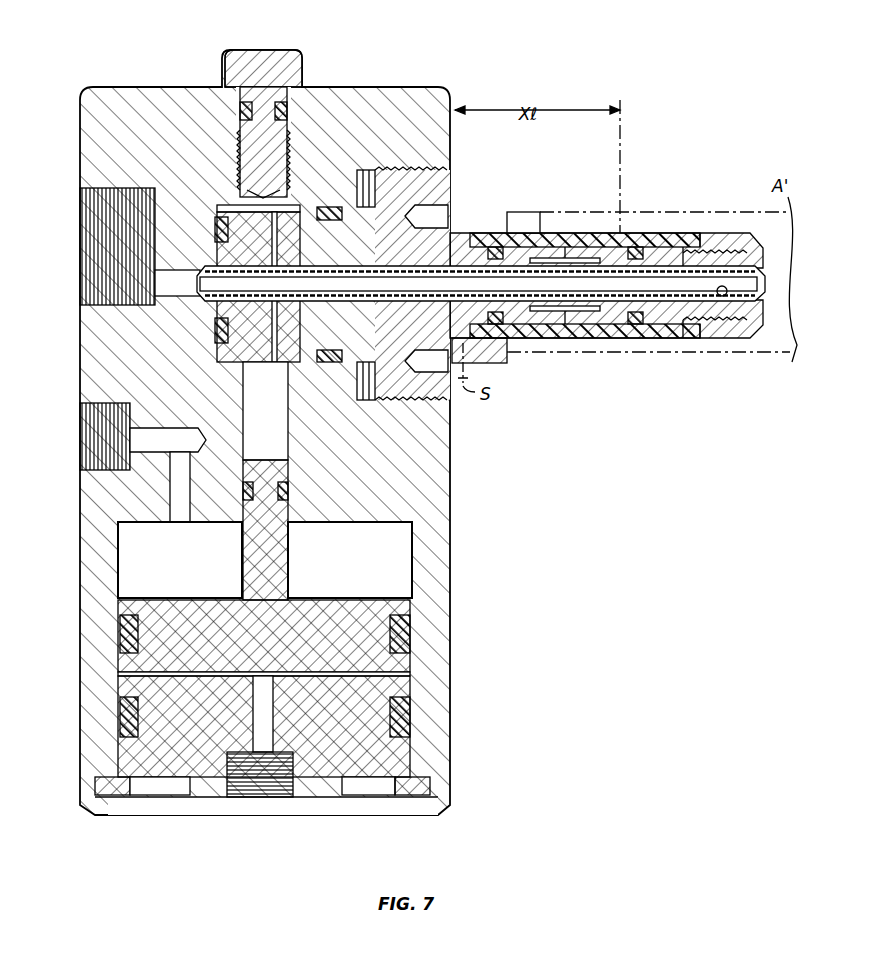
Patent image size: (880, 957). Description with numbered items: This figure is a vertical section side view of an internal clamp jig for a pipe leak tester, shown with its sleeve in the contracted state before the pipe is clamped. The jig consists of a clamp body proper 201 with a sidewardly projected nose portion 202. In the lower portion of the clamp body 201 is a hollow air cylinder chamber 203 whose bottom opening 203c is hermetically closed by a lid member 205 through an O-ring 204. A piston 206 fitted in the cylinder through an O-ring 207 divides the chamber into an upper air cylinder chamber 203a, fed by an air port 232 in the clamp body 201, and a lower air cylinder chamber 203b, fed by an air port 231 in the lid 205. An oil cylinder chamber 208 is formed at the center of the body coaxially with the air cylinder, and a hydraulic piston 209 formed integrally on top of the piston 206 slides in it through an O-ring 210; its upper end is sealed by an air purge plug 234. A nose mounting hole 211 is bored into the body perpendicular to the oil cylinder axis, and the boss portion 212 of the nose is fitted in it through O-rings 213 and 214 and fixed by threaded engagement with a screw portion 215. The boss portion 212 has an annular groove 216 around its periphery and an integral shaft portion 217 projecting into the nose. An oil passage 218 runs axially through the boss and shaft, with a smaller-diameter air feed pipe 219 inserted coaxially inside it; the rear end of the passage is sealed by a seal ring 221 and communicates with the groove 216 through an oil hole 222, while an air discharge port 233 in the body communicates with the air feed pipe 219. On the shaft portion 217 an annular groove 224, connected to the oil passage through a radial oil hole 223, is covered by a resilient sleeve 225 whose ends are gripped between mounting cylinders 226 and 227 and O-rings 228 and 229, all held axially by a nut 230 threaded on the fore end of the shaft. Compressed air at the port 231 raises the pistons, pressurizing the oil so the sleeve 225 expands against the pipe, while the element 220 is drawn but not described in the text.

The clamp body proper 201 is at (110, 357).
The nose portion 202 is at (665, 232).
The air cylinder chamber 203 is at (118, 578).
The upper air cylinder chamber 203a is at (157, 563).
The lower air cylinder chamber 203b is at (195, 672).
The opening 203c is at (140, 745).
The O-ring 204 is at (405, 722).
The lid member 205 is at (370, 750).
The piston 206 is at (348, 615).
The O-ring 207 is at (412, 642).
The oil cylinder chamber 208 is at (255, 395).
The hydraulic piston 209 is at (282, 518).
The O-ring 210 is at (288, 490).
The nose mounting hole 211 is at (316, 207).
The boss portion 212 is at (352, 348).
The O-ring 213 is at (336, 205).
The O-ring 214 is at (214, 228).
The screw portion 215 is at (430, 170).
The annular groove 216 is at (246, 195).
The shaft portion 217 is at (585, 338).
The oil passage 218 is at (512, 270).
The air feed pipe 219 is at (703, 268).
The rod end 220 is at (722, 296).
The seal ring 221 is at (200, 277).
The oil hole 222 is at (238, 208).
The radial oil hole 223 is at (578, 248).
The annular groove 224 is at (546, 240).
The resilient sleeve 225 is at (596, 240).
The mounting cylinder 226 is at (472, 243).
The mounting cylinder 227 is at (685, 250).
The O-ring 228 is at (495, 245).
The O-ring 229 is at (643, 245).
The nut 230 is at (738, 240).
The air port 231 is at (283, 797).
The air port 232 is at (95, 443).
The air discharge port 233 is at (90, 265).
The air purge plug 234 is at (268, 55).